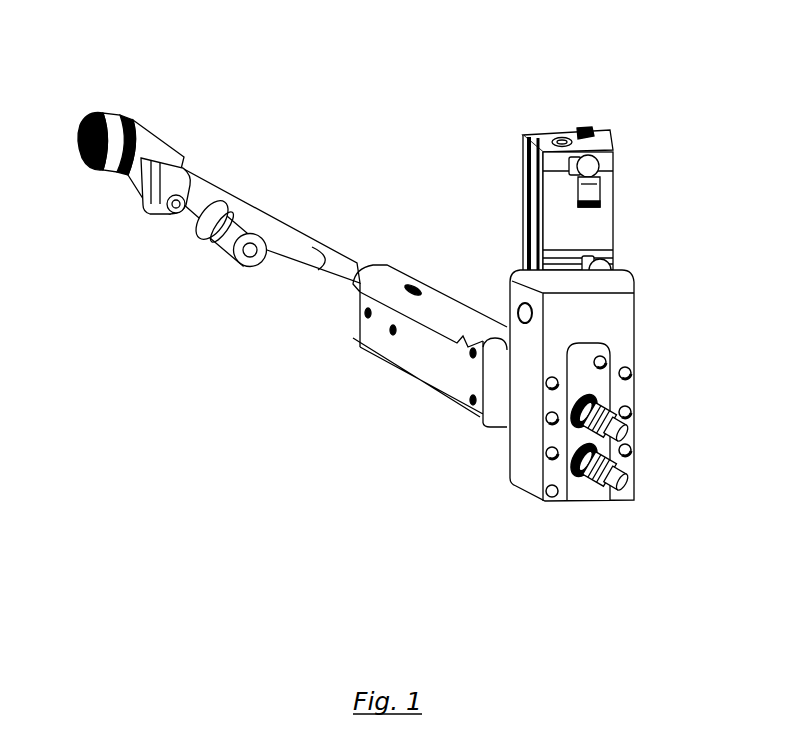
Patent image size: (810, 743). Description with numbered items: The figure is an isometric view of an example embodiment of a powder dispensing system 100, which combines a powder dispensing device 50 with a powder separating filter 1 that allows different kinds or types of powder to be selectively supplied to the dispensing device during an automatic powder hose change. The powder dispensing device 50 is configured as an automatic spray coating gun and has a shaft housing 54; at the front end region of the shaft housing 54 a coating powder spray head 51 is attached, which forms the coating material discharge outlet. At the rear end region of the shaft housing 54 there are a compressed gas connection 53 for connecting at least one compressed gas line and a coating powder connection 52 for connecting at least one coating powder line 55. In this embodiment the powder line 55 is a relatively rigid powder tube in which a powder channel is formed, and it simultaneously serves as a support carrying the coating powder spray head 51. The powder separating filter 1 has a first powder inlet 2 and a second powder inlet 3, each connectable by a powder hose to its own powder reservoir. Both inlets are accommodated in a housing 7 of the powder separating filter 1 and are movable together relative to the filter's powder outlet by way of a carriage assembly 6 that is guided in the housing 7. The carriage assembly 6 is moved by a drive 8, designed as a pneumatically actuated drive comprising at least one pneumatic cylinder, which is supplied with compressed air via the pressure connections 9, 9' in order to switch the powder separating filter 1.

The powder dispensing system 100 is at (397, 60).
The powder separating filter 1 is at (663, 142).
The first powder inlet 2 is at (670, 522).
The second powder inlet 3 is at (565, 564).
The carriage assembly 6 is at (520, 508).
The housing 7 is at (490, 484).
The drive 8 is at (474, 194).
The pressure connection 9 is at (524, 168).
The pressure connection 9' is at (536, 269).
The powder dispensing device 50 is at (318, 204).
The coating powder spray head 51 is at (50, 246).
The coating powder connection 52 is at (154, 285).
The compressed gas connection 53 is at (182, 334).
The shaft housing 54 is at (92, 272).
The powder line 55 is at (257, 341).